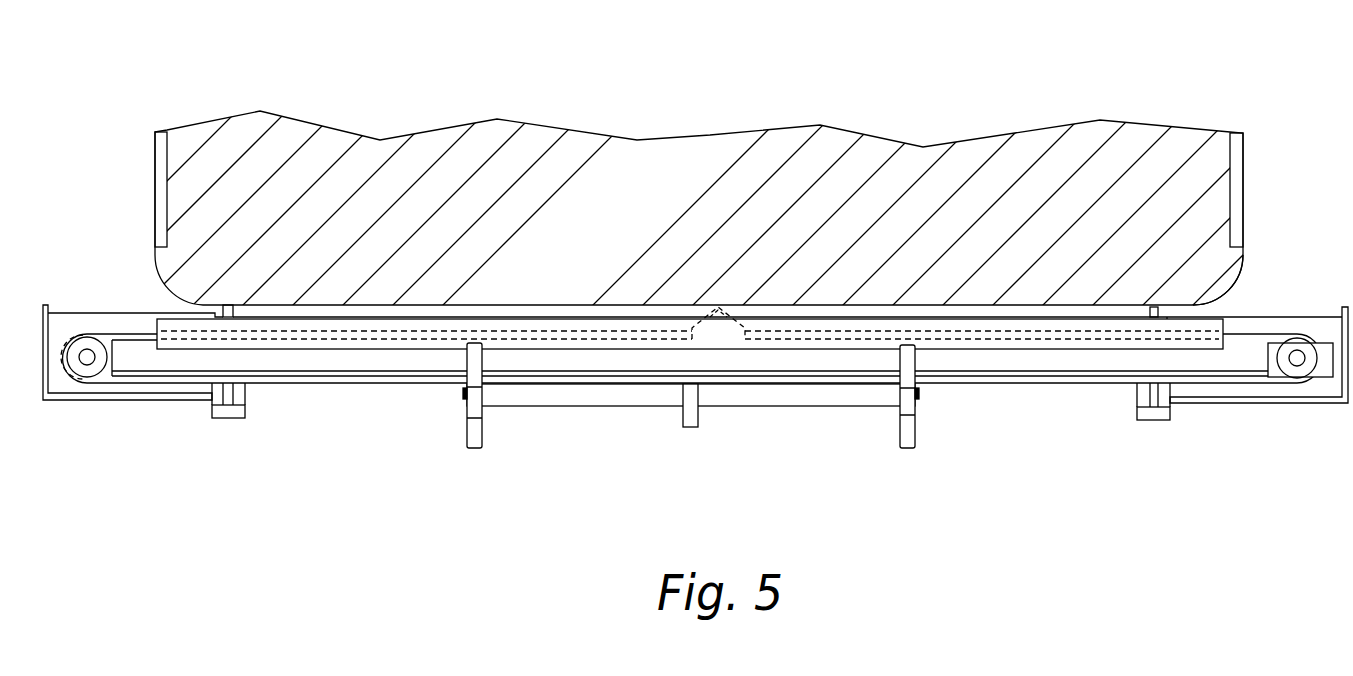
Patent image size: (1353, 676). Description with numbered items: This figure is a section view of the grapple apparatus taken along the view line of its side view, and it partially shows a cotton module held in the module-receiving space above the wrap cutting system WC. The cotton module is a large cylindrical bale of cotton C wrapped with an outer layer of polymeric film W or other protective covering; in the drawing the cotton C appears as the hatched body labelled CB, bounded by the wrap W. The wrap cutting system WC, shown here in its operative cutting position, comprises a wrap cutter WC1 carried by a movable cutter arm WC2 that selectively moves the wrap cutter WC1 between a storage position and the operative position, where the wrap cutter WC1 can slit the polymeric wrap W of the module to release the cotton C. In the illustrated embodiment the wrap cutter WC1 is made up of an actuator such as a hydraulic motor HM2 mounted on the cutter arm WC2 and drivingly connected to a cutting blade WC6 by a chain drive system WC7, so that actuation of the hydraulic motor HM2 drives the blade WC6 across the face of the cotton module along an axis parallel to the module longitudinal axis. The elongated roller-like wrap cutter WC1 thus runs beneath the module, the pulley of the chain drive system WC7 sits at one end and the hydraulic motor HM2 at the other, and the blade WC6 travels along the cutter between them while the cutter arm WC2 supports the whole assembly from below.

The cotton C is at (583, 147).
The container body CB is at (470, 150).
The polymeric film wrap W is at (1003, 268).
The wrap cutting system WC is at (339, 440).
The wrap cutter WC1 is at (772, 363).
The cutter arm WC2 is at (637, 398).
The cutting blade WC6 is at (720, 306).
The chain drive system WC7 is at (87, 357).
The hydraulic motor HM2 is at (1297, 358).